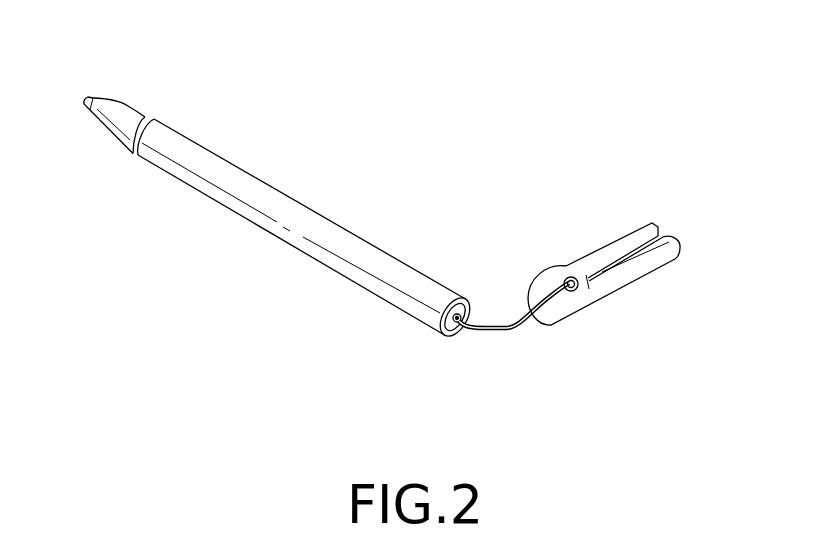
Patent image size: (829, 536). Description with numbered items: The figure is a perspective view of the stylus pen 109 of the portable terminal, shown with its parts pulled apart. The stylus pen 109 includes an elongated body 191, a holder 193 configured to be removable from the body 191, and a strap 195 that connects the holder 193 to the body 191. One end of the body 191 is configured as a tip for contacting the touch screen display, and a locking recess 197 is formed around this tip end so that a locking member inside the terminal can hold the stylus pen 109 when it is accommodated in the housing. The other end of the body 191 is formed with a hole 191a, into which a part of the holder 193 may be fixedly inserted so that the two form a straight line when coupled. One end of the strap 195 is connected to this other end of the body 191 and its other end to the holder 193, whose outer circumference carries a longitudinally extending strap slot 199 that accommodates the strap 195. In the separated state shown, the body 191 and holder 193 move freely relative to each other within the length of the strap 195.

The stylus pen 109 is at (640, 65).
The body 191 is at (377, 235).
The hole 191a is at (458, 325).
The holder 193 is at (658, 210).
The strap 195 is at (512, 331).
The locking recess 197 is at (137, 105).
The strap slot 199 is at (613, 258).